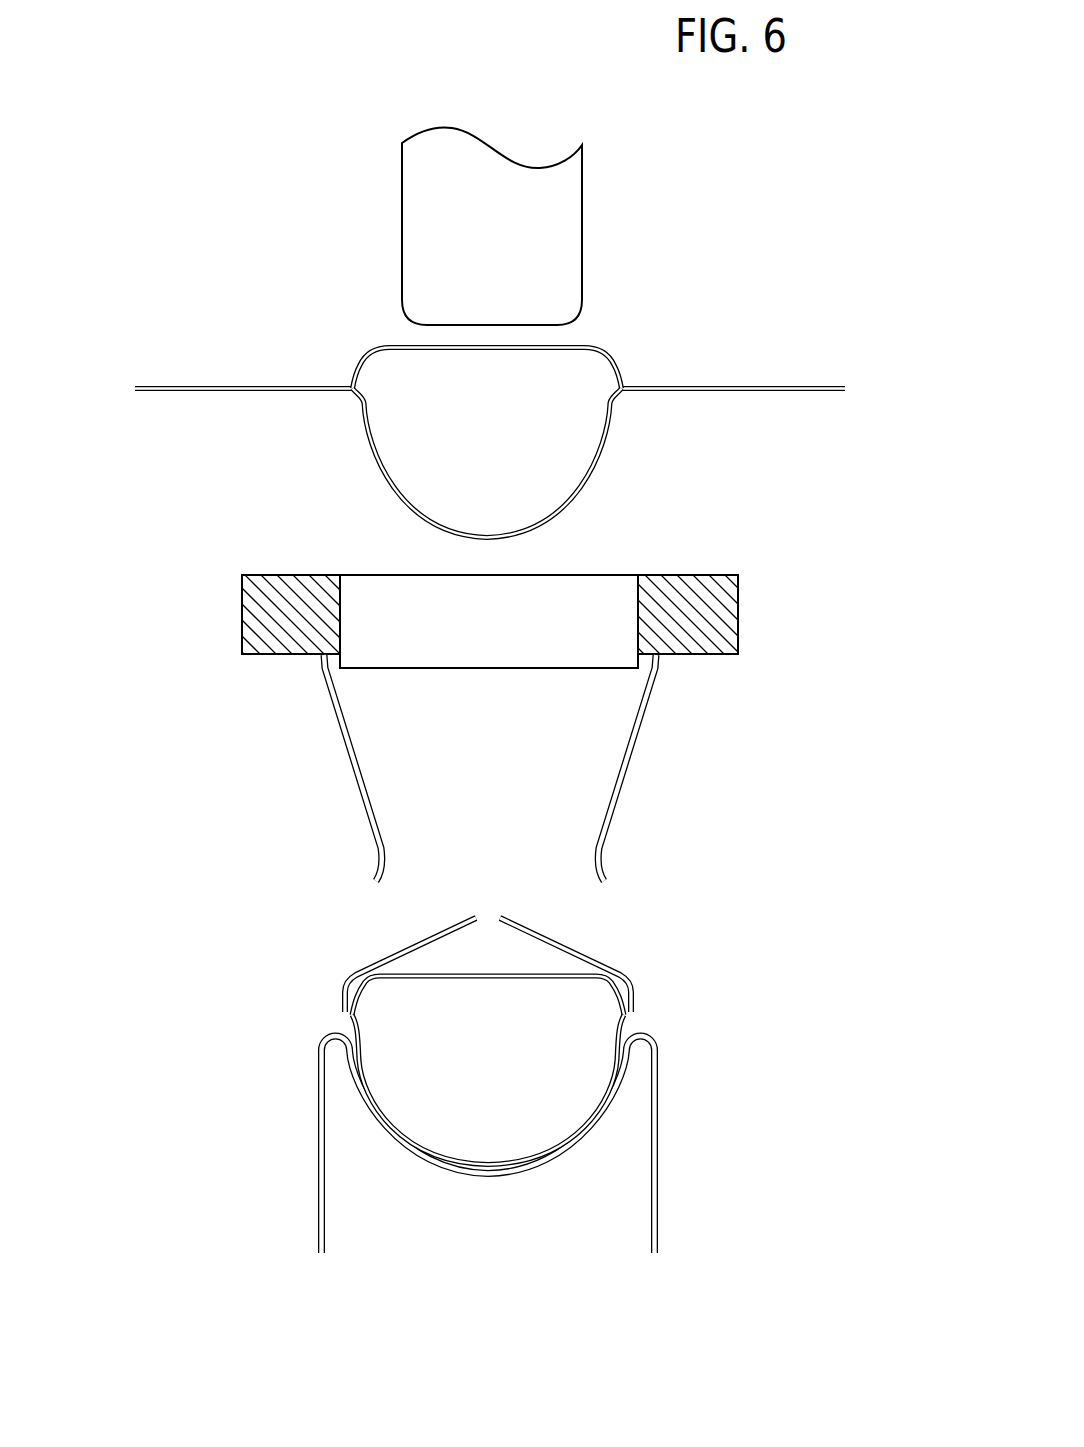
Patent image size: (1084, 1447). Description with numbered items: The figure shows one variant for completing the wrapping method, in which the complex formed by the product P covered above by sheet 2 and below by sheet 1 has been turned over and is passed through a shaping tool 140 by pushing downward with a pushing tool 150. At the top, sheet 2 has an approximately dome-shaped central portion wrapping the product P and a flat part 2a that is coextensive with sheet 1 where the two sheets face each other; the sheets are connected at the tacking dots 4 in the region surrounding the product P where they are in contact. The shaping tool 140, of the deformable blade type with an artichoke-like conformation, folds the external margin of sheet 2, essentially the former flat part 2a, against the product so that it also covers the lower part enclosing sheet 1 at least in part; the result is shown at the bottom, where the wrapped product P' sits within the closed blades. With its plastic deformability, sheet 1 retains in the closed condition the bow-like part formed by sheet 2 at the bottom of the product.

The pushing tool 150 is at (402, 217).
The shaping tool 140 is at (727, 742).
The sheet 1 is at (397, 340).
The sheet 2 is at (380, 473).
The flat part 2a is at (172, 397).
The dots 4 is at (330, 392).
The product P is at (621, 455).
The interior space after forming P' is at (331, 1090).